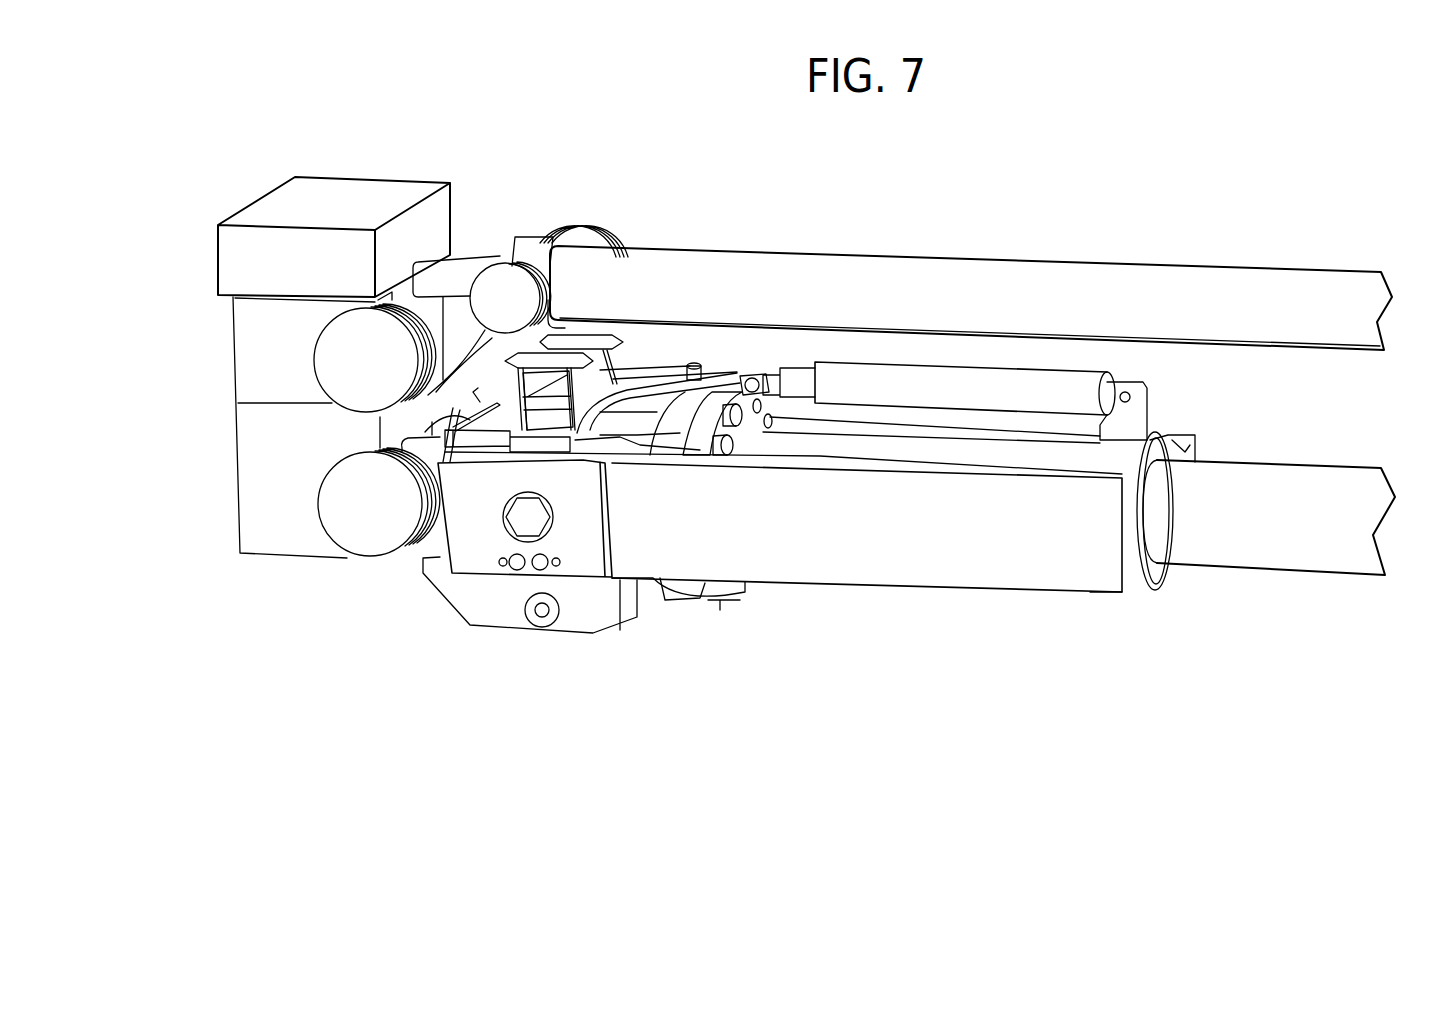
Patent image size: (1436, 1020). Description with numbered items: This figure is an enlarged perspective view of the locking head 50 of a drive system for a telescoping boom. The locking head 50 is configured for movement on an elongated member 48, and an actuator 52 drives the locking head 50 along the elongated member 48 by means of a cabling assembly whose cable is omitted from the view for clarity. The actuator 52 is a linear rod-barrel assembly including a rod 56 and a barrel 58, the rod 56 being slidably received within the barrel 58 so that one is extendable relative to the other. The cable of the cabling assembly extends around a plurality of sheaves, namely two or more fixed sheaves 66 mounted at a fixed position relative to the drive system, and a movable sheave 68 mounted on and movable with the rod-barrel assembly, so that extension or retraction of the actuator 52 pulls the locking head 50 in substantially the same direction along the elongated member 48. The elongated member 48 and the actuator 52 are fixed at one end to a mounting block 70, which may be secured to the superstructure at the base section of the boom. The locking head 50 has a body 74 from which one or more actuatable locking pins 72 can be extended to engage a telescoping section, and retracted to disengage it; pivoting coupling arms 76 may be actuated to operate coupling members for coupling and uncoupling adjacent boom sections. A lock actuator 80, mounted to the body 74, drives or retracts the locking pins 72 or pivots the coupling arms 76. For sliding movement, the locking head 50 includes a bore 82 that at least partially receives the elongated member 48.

The elongated member 48 is at (1292, 548).
The locking head 50 is at (827, 588).
The actuator 52 is at (683, 250).
The rod 56 is at (460, 270).
The barrel 58 is at (867, 280).
The fixed sheaves 66 is at (337, 373).
The movable sheave 68 is at (505, 288).
The mounting block 70 is at (338, 195).
The locking pins 72 is at (520, 525).
The body 74 is at (722, 543).
The pivoting coupling arms 76 is at (595, 333).
The lock actuator 80 is at (1012, 380).
The bore 82 is at (1138, 515).